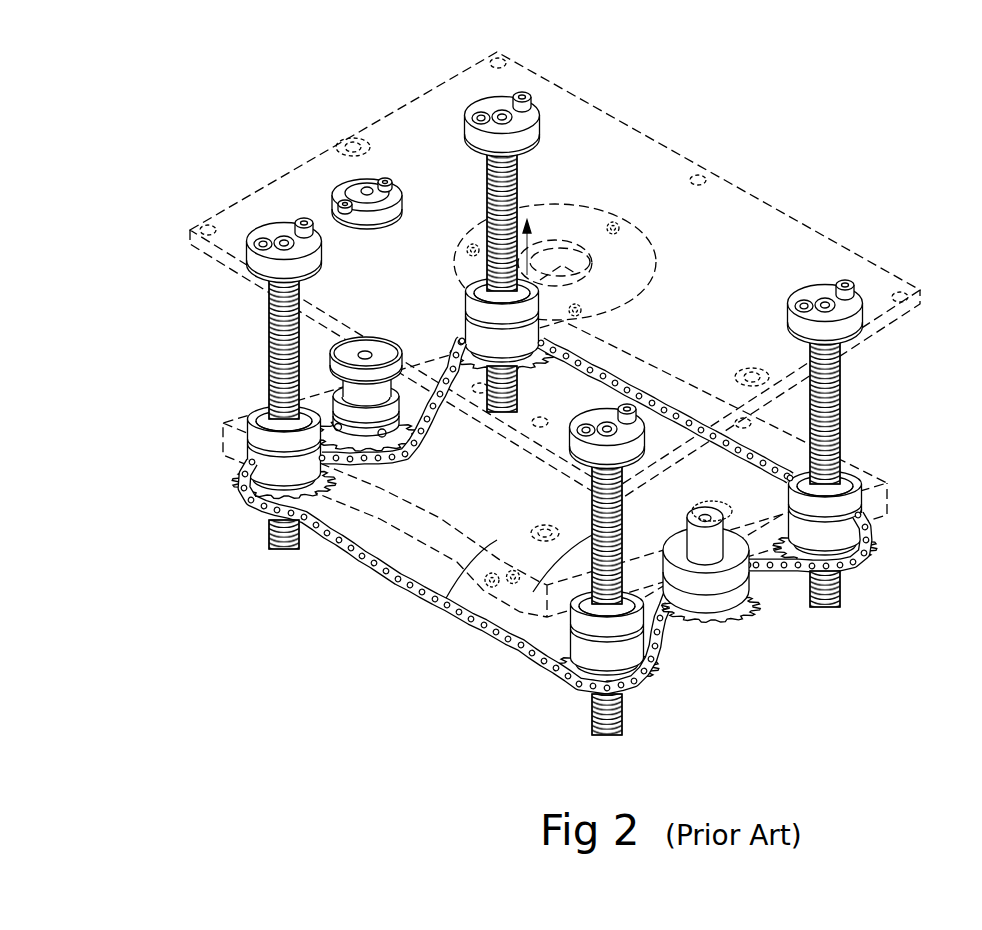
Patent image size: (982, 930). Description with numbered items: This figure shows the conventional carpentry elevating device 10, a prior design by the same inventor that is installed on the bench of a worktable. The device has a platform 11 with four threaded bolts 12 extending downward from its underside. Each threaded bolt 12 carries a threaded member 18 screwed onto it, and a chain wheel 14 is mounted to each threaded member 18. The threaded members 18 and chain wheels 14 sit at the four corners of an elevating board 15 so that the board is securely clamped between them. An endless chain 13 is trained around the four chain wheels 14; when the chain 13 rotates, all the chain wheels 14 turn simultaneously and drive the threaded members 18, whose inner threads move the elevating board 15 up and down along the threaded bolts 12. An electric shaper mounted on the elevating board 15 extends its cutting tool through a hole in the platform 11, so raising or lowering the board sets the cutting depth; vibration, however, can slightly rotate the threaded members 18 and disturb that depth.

The elevating device 10 is at (558, 387).
The platform 11 is at (853, 252).
The threaded bolt 12 is at (518, 190).
The endless chain 13 is at (380, 566).
The chain wheel 14 is at (588, 365).
The elevating board 15 is at (470, 562).
The threaded member 18 is at (481, 290).